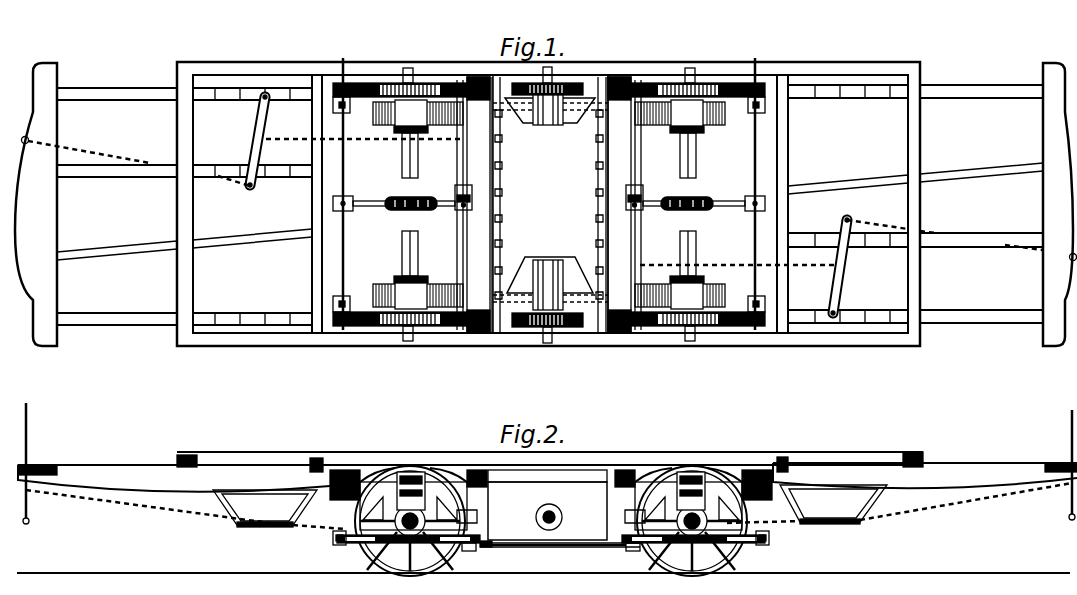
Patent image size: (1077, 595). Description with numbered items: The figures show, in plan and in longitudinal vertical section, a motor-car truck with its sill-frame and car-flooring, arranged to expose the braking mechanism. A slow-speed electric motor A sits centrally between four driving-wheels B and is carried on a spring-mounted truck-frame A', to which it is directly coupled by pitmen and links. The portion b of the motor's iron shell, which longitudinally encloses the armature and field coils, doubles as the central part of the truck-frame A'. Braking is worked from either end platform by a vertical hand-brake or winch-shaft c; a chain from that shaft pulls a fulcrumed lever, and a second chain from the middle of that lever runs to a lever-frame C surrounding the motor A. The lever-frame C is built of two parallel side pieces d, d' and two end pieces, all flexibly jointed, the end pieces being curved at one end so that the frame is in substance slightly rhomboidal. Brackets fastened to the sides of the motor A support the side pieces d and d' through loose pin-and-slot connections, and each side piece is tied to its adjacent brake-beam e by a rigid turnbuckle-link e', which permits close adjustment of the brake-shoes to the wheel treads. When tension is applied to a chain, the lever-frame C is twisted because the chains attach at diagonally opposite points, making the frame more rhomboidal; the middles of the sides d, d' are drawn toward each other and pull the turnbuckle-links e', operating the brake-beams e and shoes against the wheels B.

In FIG. 1, the electric motor A is at (550, 204).
In FIG. 2, the electric motor A is at (547, 511).
In FIG. 1, the truck-frame A' is at (549, 204).
In FIG. 2, the truck-frame A' is at (551, 480).
In FIG. 1, the driving-wheels B is at (700, 347).
In FIG. 2, the driving-wheels B is at (430, 570).
In FIG. 1, the iron shell portion b is at (492, 165).
In FIG. 2, the iron shell portion b is at (534, 518).
In FIG. 1, the lever-frame C is at (457, 233).
In FIG. 2, the lever-frame C is at (487, 555).
In FIG. 1, the vertical hand-brake shaft c is at (542, 194).
In FIG. 2, the vertical hand-brake shaft c is at (549, 463).
In FIG. 1, the side piece d is at (541, 205).
In FIG. 2, the side piece d is at (467, 557).
In FIG. 2, the side piece d' is at (625, 557).
In FIG. 1, the brake-beam e is at (549, 203).
In FIG. 2, the brake-beam e is at (551, 565).
In FIG. 1, the turnbuckle-link e' is at (549, 195).